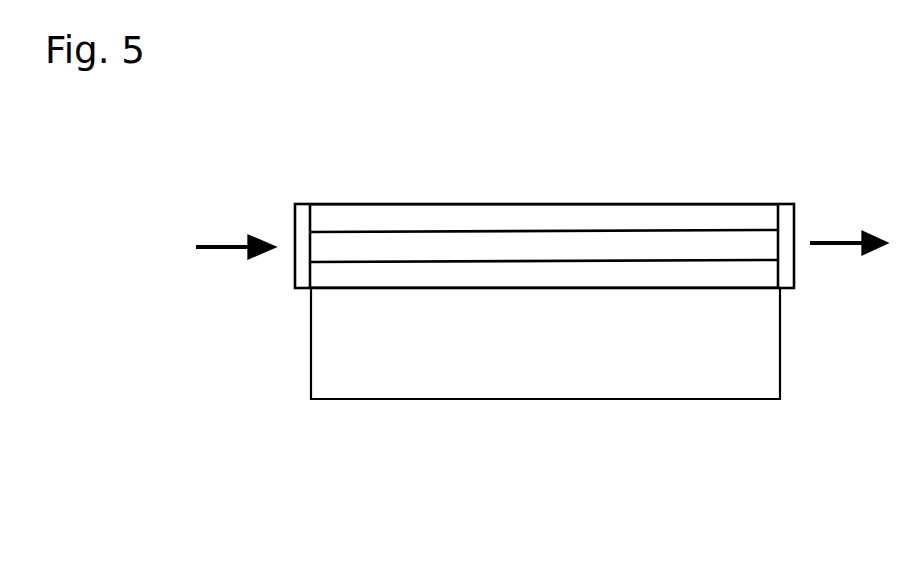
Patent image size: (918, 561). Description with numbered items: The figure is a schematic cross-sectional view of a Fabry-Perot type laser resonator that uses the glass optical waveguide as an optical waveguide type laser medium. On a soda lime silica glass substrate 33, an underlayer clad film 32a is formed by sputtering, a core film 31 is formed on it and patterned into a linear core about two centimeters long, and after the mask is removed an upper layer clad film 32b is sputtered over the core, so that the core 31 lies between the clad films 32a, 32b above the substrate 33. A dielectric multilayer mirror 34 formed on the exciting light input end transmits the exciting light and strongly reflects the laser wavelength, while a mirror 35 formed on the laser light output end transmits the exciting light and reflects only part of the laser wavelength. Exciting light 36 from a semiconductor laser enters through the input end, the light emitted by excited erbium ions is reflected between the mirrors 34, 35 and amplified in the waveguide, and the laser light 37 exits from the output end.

The core film 31 is at (513, 245).
The underlayer clad film 32a is at (760, 280).
The upper layer clad film 32b is at (752, 210).
The substrate 33 is at (515, 369).
The mirror formed on exciting light input end 34 is at (303, 255).
The mirror formed on laser light output end 35 is at (788, 252).
The exciting light 36 is at (236, 235).
The laser light 37 is at (849, 231).